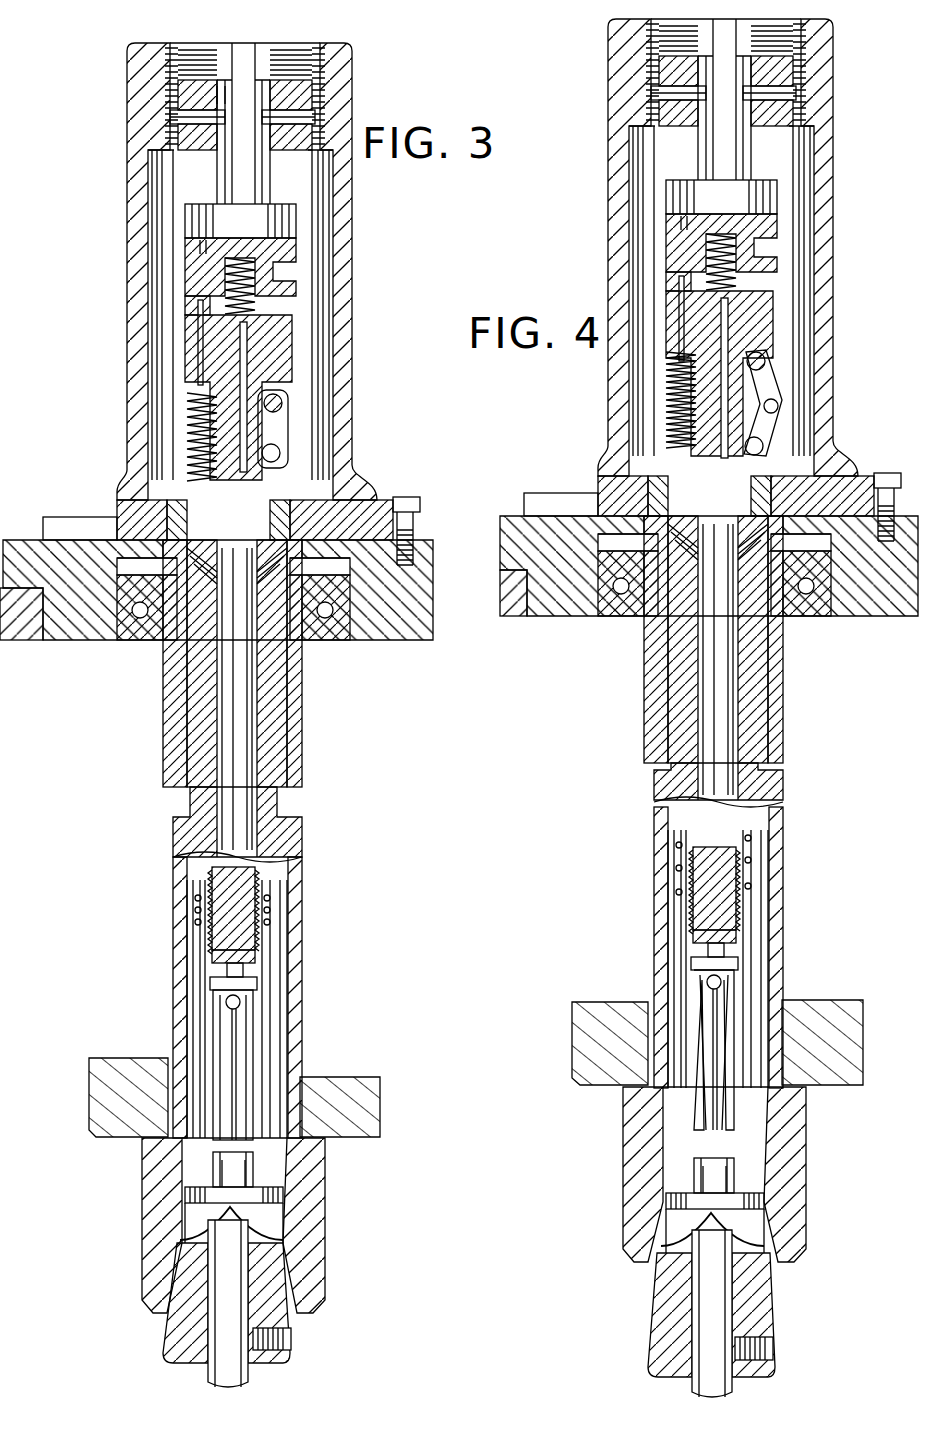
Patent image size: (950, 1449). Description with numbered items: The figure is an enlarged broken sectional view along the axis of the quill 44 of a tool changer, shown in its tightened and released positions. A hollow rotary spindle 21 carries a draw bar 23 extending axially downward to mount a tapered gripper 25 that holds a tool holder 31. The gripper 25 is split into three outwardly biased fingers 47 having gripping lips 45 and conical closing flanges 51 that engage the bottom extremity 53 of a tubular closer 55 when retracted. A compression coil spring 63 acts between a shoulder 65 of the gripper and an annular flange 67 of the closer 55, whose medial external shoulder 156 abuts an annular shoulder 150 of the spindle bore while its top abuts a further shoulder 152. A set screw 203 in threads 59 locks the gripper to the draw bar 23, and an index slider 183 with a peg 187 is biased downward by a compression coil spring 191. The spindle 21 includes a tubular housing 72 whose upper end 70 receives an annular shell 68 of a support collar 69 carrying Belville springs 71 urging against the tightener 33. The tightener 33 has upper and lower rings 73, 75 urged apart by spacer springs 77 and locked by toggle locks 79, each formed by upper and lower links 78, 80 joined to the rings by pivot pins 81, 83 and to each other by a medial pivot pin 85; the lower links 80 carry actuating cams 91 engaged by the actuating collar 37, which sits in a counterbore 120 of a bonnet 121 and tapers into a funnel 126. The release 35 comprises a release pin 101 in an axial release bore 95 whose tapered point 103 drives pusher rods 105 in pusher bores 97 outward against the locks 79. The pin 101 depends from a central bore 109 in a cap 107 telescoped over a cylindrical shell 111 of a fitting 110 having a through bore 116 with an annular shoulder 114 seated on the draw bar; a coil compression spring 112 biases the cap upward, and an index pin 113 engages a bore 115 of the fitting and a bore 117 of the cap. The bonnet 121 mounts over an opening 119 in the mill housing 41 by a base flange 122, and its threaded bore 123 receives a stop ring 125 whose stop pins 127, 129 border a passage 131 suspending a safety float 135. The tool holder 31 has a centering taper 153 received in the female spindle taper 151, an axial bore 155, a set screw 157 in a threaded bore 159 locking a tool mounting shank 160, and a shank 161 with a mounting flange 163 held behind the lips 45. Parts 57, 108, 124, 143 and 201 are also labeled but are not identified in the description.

In FIG. 3, the rotary spindle 21 is at (306, 918).
In FIG. 4, the rotary spindle 21 is at (787, 815).
In FIG. 3, the draw bar 23 is at (254, 740).
In FIG. 4, the draw bar 23 is at (735, 715).
In FIG. 3, the gripper 25 is at (212, 1036).
In FIG. 4, the gripper 25 is at (690, 997).
In FIG. 3, the tool holder 31 is at (292, 1243).
In FIG. 4, the tool holder 31 is at (775, 1240).
In FIG. 3, the tightener 33 is at (385, 385).
In FIG. 4, the tightener 33 is at (800, 360).
In FIG. 4, the release 35 is at (785, 215).
In FIG. 3, the actuating collar 37 is at (130, 506).
In FIG. 4, the actuating collar 37 is at (610, 480).
In FIG. 3, the housing 41 is at (25, 538).
In FIG. 4, the housing 41 is at (560, 580).
In FIG. 3, the quill 44 is at (86, 1096).
In FIG. 4, the quill 44 is at (566, 1042).
In FIG. 3, the gripping lips 45 is at (212, 1156).
In FIG. 4, the gripping lips 45 is at (690, 1150).
In FIG. 4, the fingers 47 is at (680, 1090).
In FIG. 3, the closing flanges 51 is at (200, 1171).
In FIG. 4, the closing flanges 51 is at (755, 1155).
In FIG. 3, the bottom extremity 53 is at (195, 1196).
In FIG. 4, the bottom extremity 53 is at (668, 1160).
In FIG. 3, the closer 55 is at (272, 1061).
In FIG. 4, the closer 55 is at (680, 910).
In FIG. 3, the threaded piston 57 is at (262, 874).
In FIG. 4, the threaded piston 57 is at (745, 850).
In FIG. 3, the threads 59 is at (270, 910).
In FIG. 4, the threads 59 is at (752, 890).
In FIG. 3, the compression coil spring 63 is at (193, 910).
In FIG. 4, the compression coil spring 63 is at (678, 865).
In FIG. 3, the shoulder 65 is at (193, 922).
In FIG. 4, the shoulder 65 is at (678, 890).
In FIG. 3, the annular flange 67 is at (193, 898).
In FIG. 4, the annular flange 67 is at (678, 838).
In FIG. 3, the annular shell 68 is at (265, 694).
In FIG. 4, the annular shell 68 is at (690, 635).
In FIG. 3, the support collar 69 is at (295, 650).
In FIG. 4, the support collar 69 is at (790, 610).
In FIG. 3, the upper end 70 is at (185, 648).
In FIG. 4, the upper end 70 is at (670, 612).
In FIG. 3, the Belville springs 71 is at (233, 600).
In FIG. 4, the Belville springs 71 is at (718, 548).
In FIG. 3, the tubular housing 72 is at (302, 840).
In FIG. 4, the tubular housing 72 is at (783, 790).
In FIG. 3, the upper ring 73 is at (300, 386).
In FIG. 4, the upper ring 73 is at (780, 340).
In FIG. 3, the lower ring 75 is at (366, 497).
In FIG. 4, the lower ring 75 is at (845, 472).
In FIG. 3, the spacer springs 77 is at (187, 416).
In FIG. 4, the spacer springs 77 is at (666, 400).
In FIG. 3, the upper link 78 is at (282, 411).
In FIG. 4, the upper link 78 is at (778, 373).
In FIG. 3, the toggle locks 79 is at (295, 446).
In FIG. 4, the toggle locks 79 is at (785, 430).
In FIG. 3, the lower link 80 is at (284, 468).
In FIG. 4, the lower link 80 is at (762, 440).
In FIG. 3, the pivot pin 81 is at (285, 403).
In FIG. 4, the pivot pin 81 is at (762, 362).
In FIG. 3, the pivot pin 83 is at (286, 480).
In FIG. 4, the pivot pin 83 is at (765, 452).
In FIG. 3, the medial pivot pin 85 is at (283, 453).
In FIG. 4, the medial pivot pin 85 is at (780, 405).
In FIG. 3, the actuating cams 91 is at (290, 463).
In FIG. 4, the actuating cams 91 is at (790, 415).
In FIG. 3, the axial release bore 95 is at (252, 326).
In FIG. 4, the axial release bore 95 is at (728, 300).
In FIG. 3, the pusher bores 97 is at (246, 560).
In FIG. 4, the pusher bores 97 is at (722, 520).
In FIG. 3, the release pin 101 is at (277, 346).
In FIG. 4, the release pin 101 is at (772, 318).
In FIG. 3, the tapered point 103 is at (225, 466).
In FIG. 4, the tapered point 103 is at (700, 440).
In FIG. 3, the pusher rods 105 is at (268, 440).
In FIG. 4, the pusher rods 105 is at (780, 395).
In FIG. 3, the cap 107 is at (272, 248).
In FIG. 4, the cap 107 is at (750, 185).
In FIG. 3, the piston cavity 108 is at (282, 268).
In FIG. 4, the piston cavity 108 is at (765, 235).
In FIG. 3, the central bore 109 is at (282, 280).
In FIG. 4, the central bore 109 is at (760, 250).
In FIG. 3, the fitting 110 is at (250, 362).
In FIG. 3, the cylindrical shell 111 is at (272, 296).
In FIG. 4, the cylindrical shell 111 is at (755, 270).
In FIG. 3, the coil compression spring 112 is at (225, 300).
In FIG. 4, the coil compression spring 112 is at (706, 268).
In FIG. 3, the index pin 113 is at (198, 310).
In FIG. 4, the index pin 113 is at (680, 288).
In FIG. 3, the annular shoulder 114 is at (215, 360).
In FIG. 3, the upwardly opening bore 115 is at (199, 335).
In FIG. 4, the upwardly opening bore 115 is at (680, 318).
In FIG. 3, the through bore 116 is at (215, 259).
In FIG. 3, the bore 117 is at (202, 243).
In FIG. 4, the bore 117 is at (683, 222).
In FIG. 3, the opening 119 is at (410, 600).
In FIG. 4, the opening 119 is at (835, 590).
In FIG. 3, the counterbore 120 is at (406, 497).
In FIG. 4, the counterbore 120 is at (640, 500).
In FIG. 3, the bonnet 121 is at (358, 64).
In FIG. 4, the bonnet 121 is at (838, 50).
In FIG. 3, the base flange 122 is at (395, 531).
In FIG. 4, the base flange 122 is at (620, 508).
In FIG. 3, the threaded bore 123 is at (300, 42).
In FIG. 4, the threaded bore 123 is at (660, 50).
In FIG. 3, the seal 124 is at (170, 492).
In FIG. 4, the seal 124 is at (650, 470).
In FIG. 3, the stop ring 125 is at (196, 78).
In FIG. 4, the stop ring 125 is at (660, 70).
In FIG. 3, the funnel 126 is at (180, 512).
In FIG. 4, the funnel 126 is at (660, 488).
In FIG. 3, the stop pin 127 is at (185, 117).
In FIG. 4, the stop pin 127 is at (668, 92).
In FIG. 3, the stop pin 129 is at (288, 117).
In FIG. 4, the stop pin 129 is at (770, 92).
In FIG. 3, the passage 131 is at (187, 92).
In FIG. 3, the safety float 135 is at (250, 52).
In FIG. 4, the safety float 135 is at (760, 33).
In FIG. 3, the piston 143 is at (280, 216).
In FIG. 4, the piston 143 is at (775, 190).
In FIG. 3, the annular shoulder 150 is at (275, 1010).
In FIG. 4, the annular shoulder 150 is at (757, 967).
In FIG. 3, the spindle taper 151 is at (305, 1301).
In FIG. 4, the spindle taper 151 is at (785, 1244).
In FIG. 3, the shoulder 152 is at (272, 886).
In FIG. 3, the centering taper 153 is at (291, 1281).
In FIG. 4, the centering taper 153 is at (772, 1280).
In FIG. 3, the axial bore 155 is at (249, 1383).
In FIG. 4, the axial bore 155 is at (733, 1382).
In FIG. 3, the medial external shoulder 156 is at (195, 1001).
In FIG. 4, the medial external shoulder 156 is at (673, 955).
In FIG. 3, the set screw 157 is at (290, 1330).
In FIG. 4, the set screw 157 is at (772, 1338).
In FIG. 3, the threaded bore 159 is at (289, 1346).
In FIG. 4, the threaded bore 159 is at (775, 1352).
In FIG. 3, the mounting shank 160 is at (208, 1386).
In FIG. 4, the mounting shank 160 is at (692, 1394).
In FIG. 3, the shank 161 is at (248, 1179).
In FIG. 4, the shank 161 is at (700, 1178).
In FIG. 3, the mounting flange 163 is at (255, 1166).
In FIG. 4, the mounting flange 163 is at (735, 1168).
In FIG. 3, the index slider 183 is at (276, 1100).
In FIG. 4, the index slider 183 is at (760, 1012).
In FIG. 3, the peg 187 is at (268, 1036).
In FIG. 4, the peg 187 is at (752, 985).
In FIG. 3, the compression coil spring 191 is at (204, 990).
In FIG. 4, the compression coil spring 191 is at (678, 945).
In FIG. 3, the piston base 201 is at (257, 952).
In FIG. 4, the piston base 201 is at (740, 935).
In FIG. 3, the set screw 203 is at (245, 969).
In FIG. 4, the set screw 203 is at (728, 950).